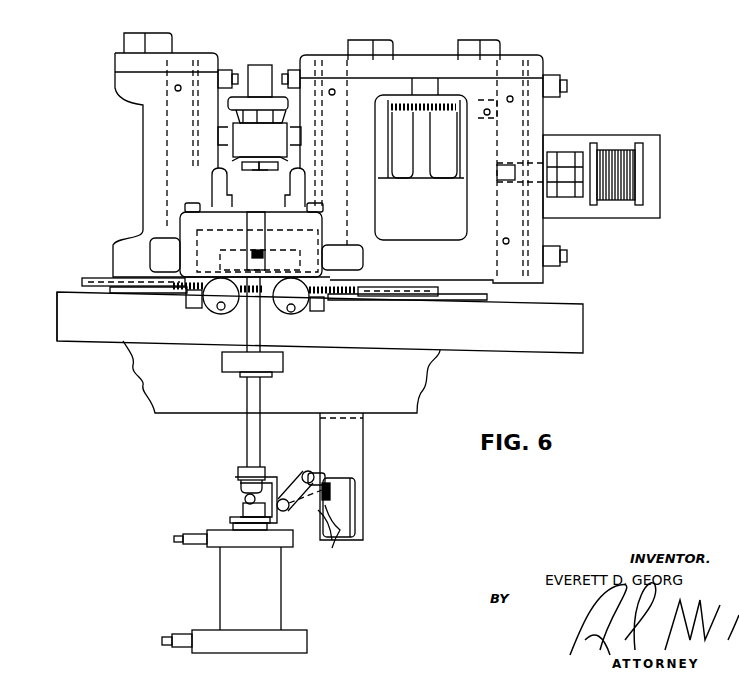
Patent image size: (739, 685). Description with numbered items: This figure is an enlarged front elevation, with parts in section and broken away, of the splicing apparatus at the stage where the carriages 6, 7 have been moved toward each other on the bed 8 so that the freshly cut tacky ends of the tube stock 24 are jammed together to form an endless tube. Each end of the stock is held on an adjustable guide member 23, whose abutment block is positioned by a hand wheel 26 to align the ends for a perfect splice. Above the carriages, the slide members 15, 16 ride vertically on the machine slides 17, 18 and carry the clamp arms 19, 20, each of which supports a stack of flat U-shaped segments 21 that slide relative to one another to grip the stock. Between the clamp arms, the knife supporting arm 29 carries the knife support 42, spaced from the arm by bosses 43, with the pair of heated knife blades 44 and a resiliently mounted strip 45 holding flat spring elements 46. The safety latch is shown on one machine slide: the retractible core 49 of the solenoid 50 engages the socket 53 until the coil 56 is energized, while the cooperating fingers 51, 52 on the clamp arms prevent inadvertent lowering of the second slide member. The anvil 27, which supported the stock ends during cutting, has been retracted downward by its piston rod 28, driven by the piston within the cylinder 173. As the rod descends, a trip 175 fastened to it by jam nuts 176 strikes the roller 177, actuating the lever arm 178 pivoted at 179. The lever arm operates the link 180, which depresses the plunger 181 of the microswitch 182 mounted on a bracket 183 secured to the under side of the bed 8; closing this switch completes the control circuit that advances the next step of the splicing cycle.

The carriage 6 is at (574, 326).
The carriage 7 is at (62, 305).
The bed 8 is at (420, 381).
The slide member 15 is at (537, 232).
The slide member 16 is at (152, 134).
The machine slide 17 is at (493, 48).
The machine slide 18 is at (165, 47).
The clamp arm 19 is at (306, 191).
The clamp arm 20 is at (216, 184).
The segments 21 is at (192, 208).
The guide member 23 is at (196, 294).
The tube stock 24 is at (97, 281).
The hand wheel 26 is at (217, 306).
The anvil 27 is at (285, 362).
The piston rod 28 is at (258, 399).
The arm 29 is at (259, 72).
The knife support 42 is at (242, 147).
The bosses 43 is at (237, 115).
The knife blades 44 is at (224, 146).
The strip 45 is at (255, 170).
The spring elements 46 is at (263, 158).
The retractible core 49 is at (558, 173).
The solenoid 50 is at (665, 173).
The finger 51 is at (258, 250).
The finger 52 is at (253, 238).
The socket 53 is at (487, 118).
The coil 56 is at (612, 157).
The cylinder 173 is at (268, 603).
The trip 175 is at (280, 477).
The jam nuts 176 is at (238, 478).
The roller 177 is at (286, 512).
The lever arm 178 is at (337, 530).
The pivot 179 is at (322, 479).
The link 180 is at (333, 487).
The plunger 181 is at (330, 512).
The microswitch 182 is at (345, 503).
The bracket 183 is at (356, 437).